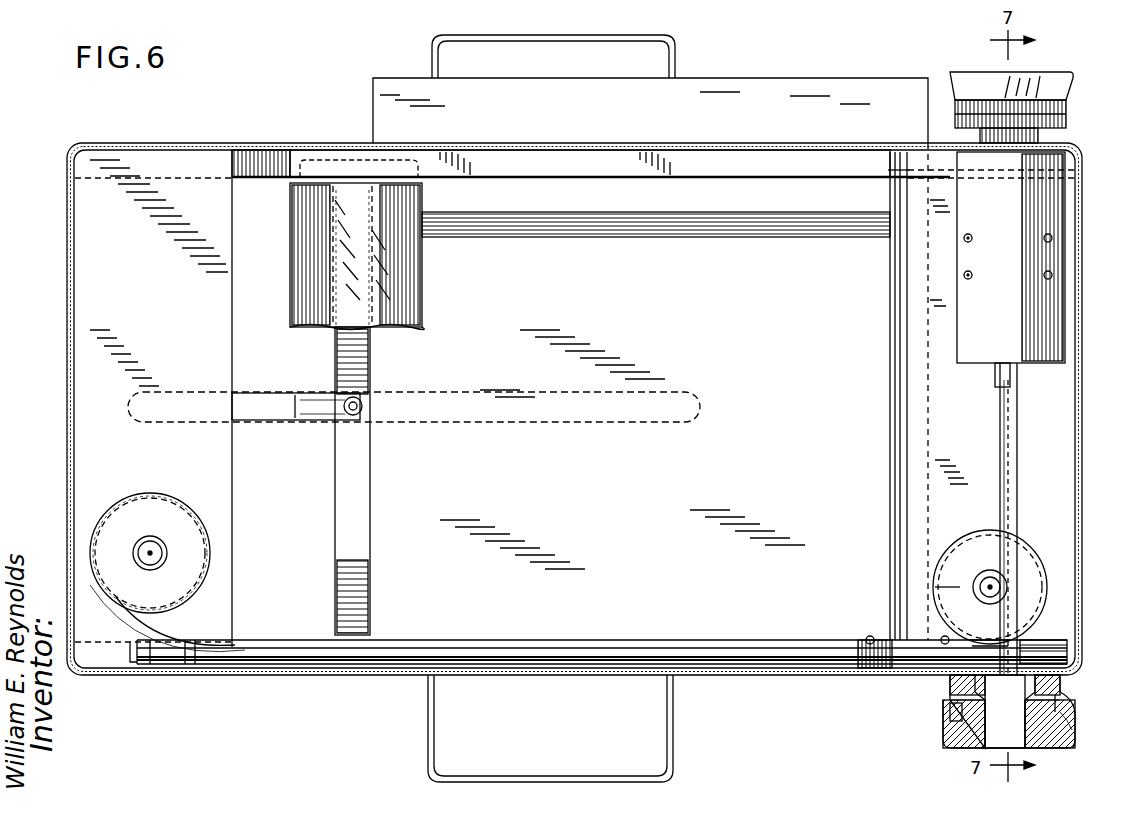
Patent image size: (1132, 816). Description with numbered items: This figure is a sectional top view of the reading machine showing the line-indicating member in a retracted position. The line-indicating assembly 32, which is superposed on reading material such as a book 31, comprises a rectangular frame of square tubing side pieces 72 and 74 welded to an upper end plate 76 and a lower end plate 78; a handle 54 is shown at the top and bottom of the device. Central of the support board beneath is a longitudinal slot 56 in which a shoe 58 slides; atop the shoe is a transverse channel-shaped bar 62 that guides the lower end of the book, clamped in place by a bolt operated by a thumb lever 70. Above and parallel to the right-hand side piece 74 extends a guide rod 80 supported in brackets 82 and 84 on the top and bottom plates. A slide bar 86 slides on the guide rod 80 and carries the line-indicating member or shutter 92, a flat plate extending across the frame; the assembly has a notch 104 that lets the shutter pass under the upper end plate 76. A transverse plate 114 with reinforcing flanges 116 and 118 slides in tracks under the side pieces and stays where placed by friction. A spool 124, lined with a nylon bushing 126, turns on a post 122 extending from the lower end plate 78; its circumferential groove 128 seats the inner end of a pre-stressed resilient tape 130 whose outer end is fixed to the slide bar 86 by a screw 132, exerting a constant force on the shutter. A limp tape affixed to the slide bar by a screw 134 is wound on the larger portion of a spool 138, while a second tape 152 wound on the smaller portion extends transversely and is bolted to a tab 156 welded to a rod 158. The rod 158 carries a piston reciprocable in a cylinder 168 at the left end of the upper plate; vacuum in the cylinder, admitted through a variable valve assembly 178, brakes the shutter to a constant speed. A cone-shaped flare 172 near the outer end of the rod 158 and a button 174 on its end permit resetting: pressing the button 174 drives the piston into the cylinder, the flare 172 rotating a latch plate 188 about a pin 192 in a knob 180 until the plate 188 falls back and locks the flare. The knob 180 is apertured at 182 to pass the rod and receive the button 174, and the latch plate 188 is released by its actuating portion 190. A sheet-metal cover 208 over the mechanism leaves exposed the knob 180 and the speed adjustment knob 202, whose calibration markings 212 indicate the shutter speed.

The book 31 is at (790, 92).
The line-indicating assembly 32 is at (220, 140).
The handle 54 is at (676, 46).
The slot 56 is at (258, 398).
The shoe 58 is at (403, 422).
The transverse channel-shaped bar 62 is at (345, 512).
The thumb lever 70 is at (323, 412).
The side piece 72 is at (520, 160).
The side piece 74 is at (528, 652).
The upper end plate 76 is at (968, 448).
The lower end plate 78 is at (160, 322).
The guide rod 80 is at (410, 648).
The bracket 82 is at (1045, 645).
The bracket 84 is at (148, 640).
The slide bar 86 is at (880, 665).
The line-indicating member 92 is at (902, 350).
The notch 104 is at (985, 640).
The transverse plate 114 is at (408, 272).
The reinforcing flange 116 is at (290, 262).
The reinforcing flange 118 is at (422, 302).
The post 122 is at (175, 530).
The spool 124 is at (172, 500).
The bushing 126 is at (140, 565).
The circumferential groove 128 is at (118, 505).
The resilient tape 130 is at (278, 642).
The screw 132 is at (870, 640).
The screw 134 is at (940, 642).
The spool 138 is at (1020, 560).
The tape 152 is at (1018, 422).
The tab 156 is at (995, 378).
The rod 158 is at (1018, 482).
The cylinder 168 is at (1045, 204).
The cone-shaped flare 172 is at (952, 688).
The button 174 is at (1075, 726).
The variable valve assembly 178 is at (1066, 70).
The knob 180 is at (943, 744).
The central aperture 182 is at (950, 706).
The latch plate 188 is at (1062, 690).
The actuating portion 190 is at (950, 722).
The pin 192 is at (1066, 708).
The speed adjustment knob 202 is at (965, 80).
The cover 208 is at (275, 148).
The calibration markings 212 is at (960, 118).